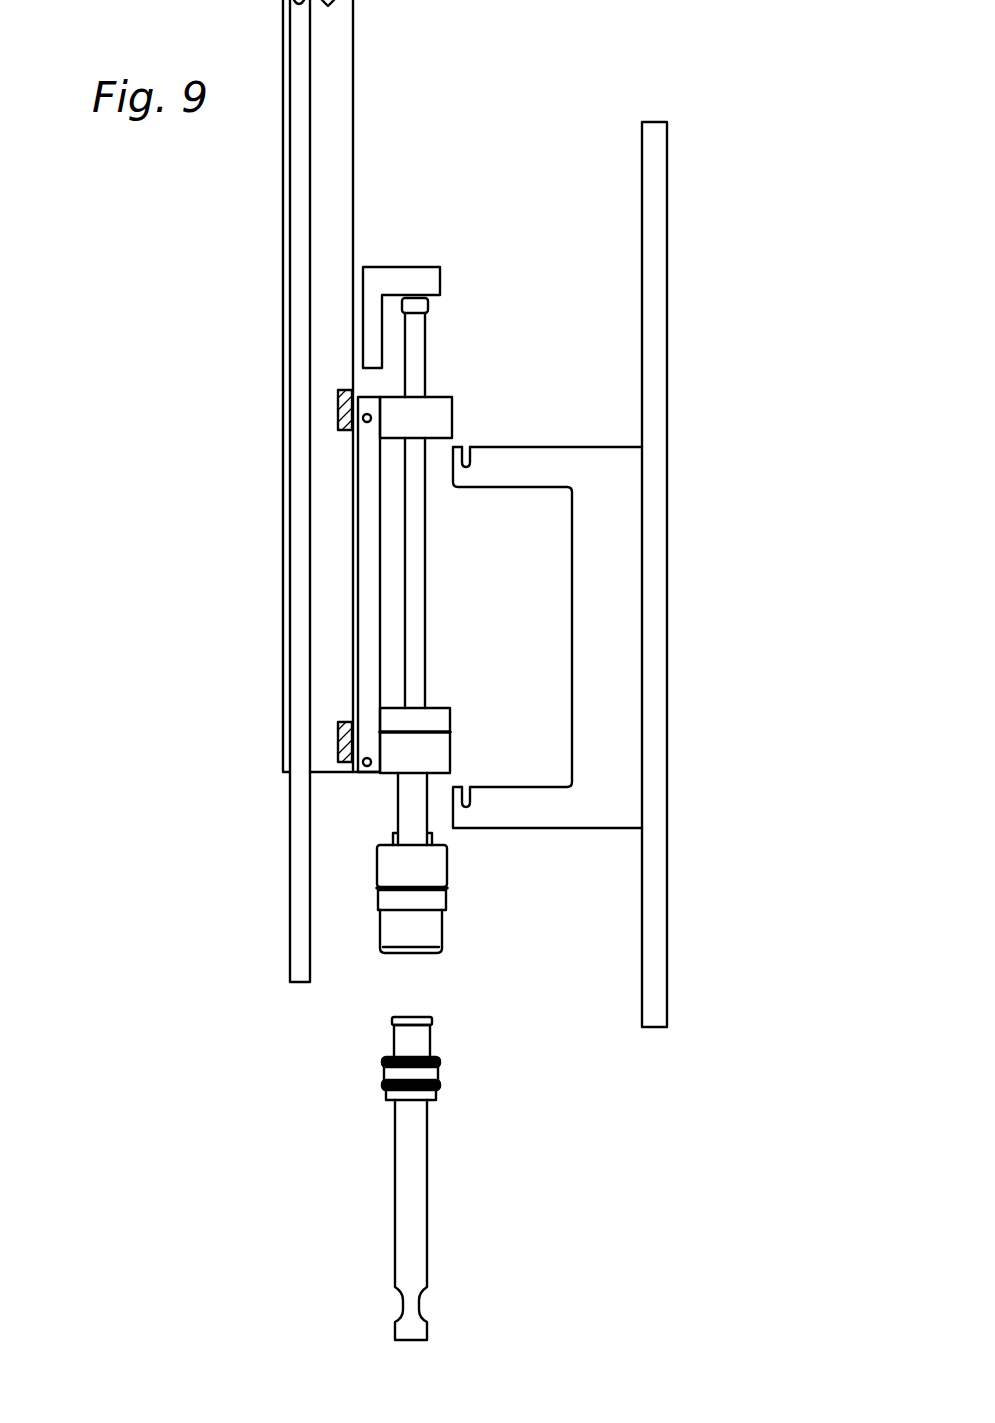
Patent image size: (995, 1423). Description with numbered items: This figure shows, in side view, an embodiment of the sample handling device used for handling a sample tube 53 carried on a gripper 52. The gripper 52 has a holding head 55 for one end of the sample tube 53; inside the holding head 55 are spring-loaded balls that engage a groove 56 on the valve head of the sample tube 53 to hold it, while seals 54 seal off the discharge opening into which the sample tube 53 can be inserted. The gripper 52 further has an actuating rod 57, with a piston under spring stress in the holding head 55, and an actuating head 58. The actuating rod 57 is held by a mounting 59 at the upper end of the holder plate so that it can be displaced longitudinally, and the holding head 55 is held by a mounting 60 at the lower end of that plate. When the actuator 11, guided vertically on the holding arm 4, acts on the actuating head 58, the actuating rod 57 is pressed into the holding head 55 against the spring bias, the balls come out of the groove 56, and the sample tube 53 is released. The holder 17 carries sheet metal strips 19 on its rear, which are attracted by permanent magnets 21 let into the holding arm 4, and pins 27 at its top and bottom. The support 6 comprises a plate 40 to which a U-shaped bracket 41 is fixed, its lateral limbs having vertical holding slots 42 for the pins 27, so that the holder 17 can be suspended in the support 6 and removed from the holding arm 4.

The holding arm 4 is at (276, 227).
The support 6 is at (598, 574).
The actuator 11 is at (388, 247).
The holder 17 is at (395, 382).
The sheet metal strips 19 is at (352, 440).
The permanent magnets 21 is at (337, 403).
The pin 27 is at (367, 768).
The plate 40 is at (658, 238).
The U-shaped bracket 41 is at (547, 605).
The holding slots 42 is at (470, 445).
The gripper 52 is at (468, 878).
The sample tube 53 is at (443, 1158).
The seals 54 is at (445, 1063).
The holding head 55 is at (378, 925).
The groove 56 is at (430, 1025).
The actuating rod 57 is at (425, 640).
The actuating head 58 is at (423, 307).
The mounting 59 is at (448, 410).
The mounting 60 is at (433, 757).